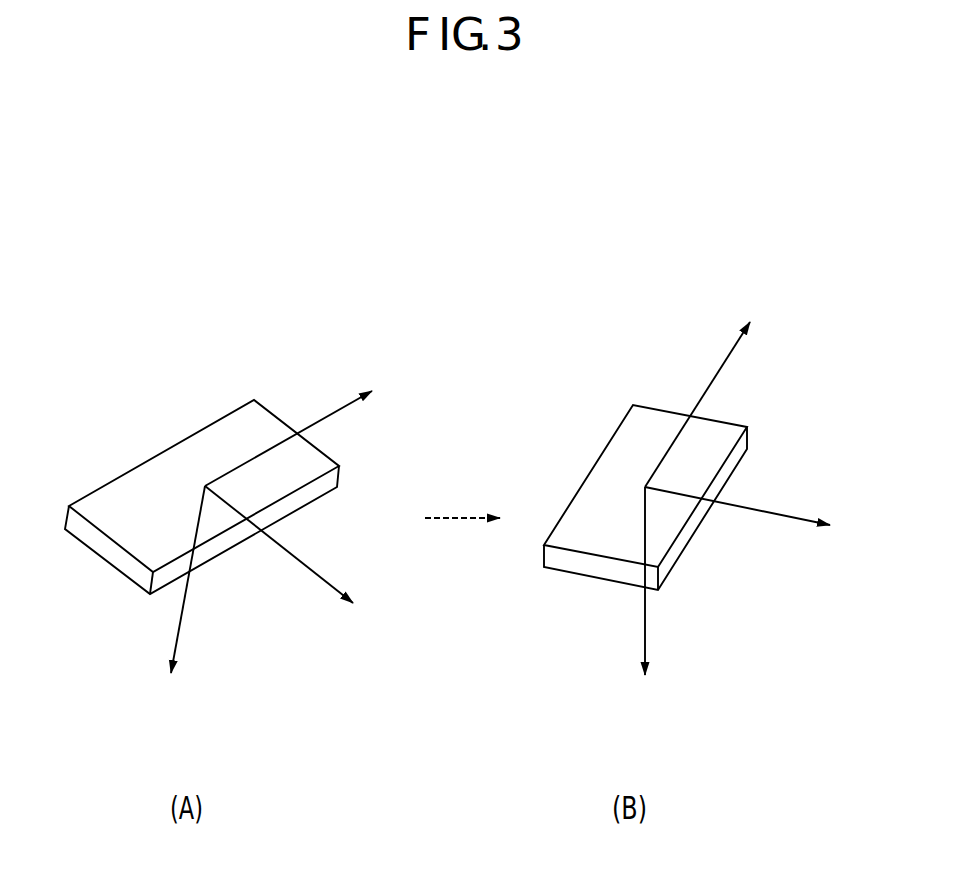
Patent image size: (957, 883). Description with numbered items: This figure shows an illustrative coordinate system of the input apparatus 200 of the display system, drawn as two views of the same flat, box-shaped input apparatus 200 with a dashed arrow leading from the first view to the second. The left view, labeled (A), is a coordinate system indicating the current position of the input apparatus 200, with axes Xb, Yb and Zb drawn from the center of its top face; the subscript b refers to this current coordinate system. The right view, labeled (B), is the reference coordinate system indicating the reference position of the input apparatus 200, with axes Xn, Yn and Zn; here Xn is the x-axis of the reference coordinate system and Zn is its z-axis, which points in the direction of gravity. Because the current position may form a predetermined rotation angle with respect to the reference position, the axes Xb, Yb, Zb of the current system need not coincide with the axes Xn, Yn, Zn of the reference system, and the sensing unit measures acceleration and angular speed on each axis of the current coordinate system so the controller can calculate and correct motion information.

The input apparatus 200 is at (243, 411).
The x-axis of the current coordinate system Xb is at (305, 425).
The y-axis of the current coordinate system Yb is at (293, 557).
The z-axis of the current coordinate system Zb is at (186, 595).
The x-axis of the reference coordinate system Xn is at (707, 390).
The y-axis of the reference coordinate system Yn is at (754, 516).
The z-axis of the reference coordinate system Zn is at (650, 597).